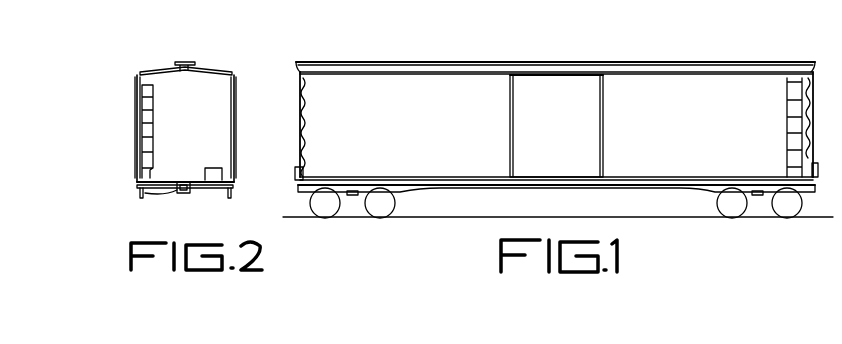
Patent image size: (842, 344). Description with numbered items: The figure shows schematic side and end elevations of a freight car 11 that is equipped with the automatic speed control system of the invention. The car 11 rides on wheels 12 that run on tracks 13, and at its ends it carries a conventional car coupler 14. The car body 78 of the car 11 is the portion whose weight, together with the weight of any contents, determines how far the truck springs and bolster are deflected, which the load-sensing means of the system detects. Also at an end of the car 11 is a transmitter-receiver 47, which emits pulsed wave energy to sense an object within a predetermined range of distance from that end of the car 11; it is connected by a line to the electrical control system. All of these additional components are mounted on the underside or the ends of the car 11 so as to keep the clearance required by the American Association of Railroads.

In FIG. 1, the freight car 11 is at (395, 53).
In FIG. 2, the freight car 11 is at (122, 67).
In FIG. 1, the car body 78 is at (467, 62).
In FIG. 1, the wheels 12 is at (330, 210).
In FIG. 1, the tracks 13 is at (443, 217).
In FIG. 2, the transmitter-receiver 47 is at (210, 168).
In FIG. 2, the car coupler 14 is at (192, 190).